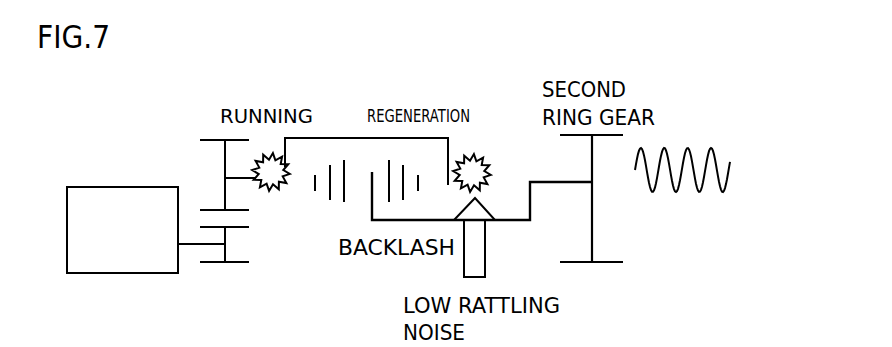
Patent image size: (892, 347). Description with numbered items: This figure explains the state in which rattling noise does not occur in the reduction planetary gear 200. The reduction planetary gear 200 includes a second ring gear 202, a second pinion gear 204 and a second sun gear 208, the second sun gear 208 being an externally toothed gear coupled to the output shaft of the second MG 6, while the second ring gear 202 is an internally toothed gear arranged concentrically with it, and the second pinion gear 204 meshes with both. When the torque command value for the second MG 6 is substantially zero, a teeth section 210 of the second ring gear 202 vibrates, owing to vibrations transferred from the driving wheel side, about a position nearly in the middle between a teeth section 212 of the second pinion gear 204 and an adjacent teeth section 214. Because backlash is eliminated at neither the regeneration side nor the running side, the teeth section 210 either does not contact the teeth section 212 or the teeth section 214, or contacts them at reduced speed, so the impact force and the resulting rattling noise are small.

The second MG 6 is at (118, 187).
The reduction planetary gear 200 is at (694, 114).
The second ring gear 202 is at (592, 246).
The second pinion gear 204 is at (224, 163).
The second sun gear 208 is at (230, 262).
The teeth section 210 is at (368, 197).
The teeth section 212 is at (450, 150).
The teeth section 214 is at (286, 150).